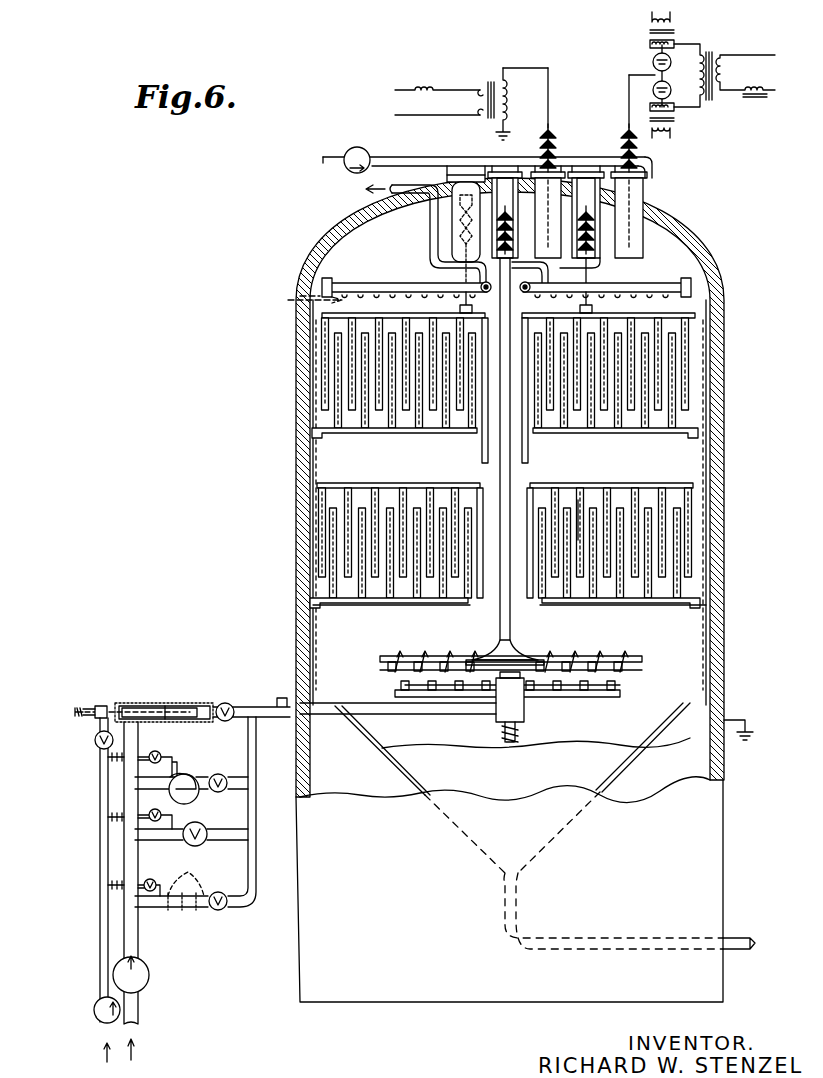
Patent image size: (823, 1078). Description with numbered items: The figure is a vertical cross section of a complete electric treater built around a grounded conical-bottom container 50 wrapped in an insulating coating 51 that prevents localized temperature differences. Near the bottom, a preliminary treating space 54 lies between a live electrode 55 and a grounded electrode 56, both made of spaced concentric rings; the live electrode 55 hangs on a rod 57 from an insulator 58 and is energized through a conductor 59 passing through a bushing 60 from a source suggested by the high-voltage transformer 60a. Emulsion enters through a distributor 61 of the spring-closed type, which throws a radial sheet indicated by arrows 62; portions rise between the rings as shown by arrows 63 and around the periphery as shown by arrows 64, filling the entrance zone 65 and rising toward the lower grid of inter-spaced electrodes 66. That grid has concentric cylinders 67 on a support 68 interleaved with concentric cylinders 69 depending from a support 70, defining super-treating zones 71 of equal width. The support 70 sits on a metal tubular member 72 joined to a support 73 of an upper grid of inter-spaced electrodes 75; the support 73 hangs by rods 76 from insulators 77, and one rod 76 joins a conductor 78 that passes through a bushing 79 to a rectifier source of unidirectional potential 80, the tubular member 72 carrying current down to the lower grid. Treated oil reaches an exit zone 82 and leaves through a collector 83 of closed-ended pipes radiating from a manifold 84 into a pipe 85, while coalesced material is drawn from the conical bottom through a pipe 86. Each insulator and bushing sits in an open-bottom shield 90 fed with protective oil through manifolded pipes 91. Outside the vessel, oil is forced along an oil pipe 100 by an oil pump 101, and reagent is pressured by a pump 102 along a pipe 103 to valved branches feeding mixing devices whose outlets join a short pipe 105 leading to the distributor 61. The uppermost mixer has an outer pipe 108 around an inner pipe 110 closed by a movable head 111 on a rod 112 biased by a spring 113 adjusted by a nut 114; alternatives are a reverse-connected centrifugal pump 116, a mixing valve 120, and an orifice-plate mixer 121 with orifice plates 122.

The container 50 is at (294, 456).
The coating 51 is at (300, 492).
The preliminary treating space 54 is at (384, 684).
The live electrode 55 is at (640, 660).
The grounded electrode 56 is at (625, 686).
The rod 57 is at (515, 630).
The insulator 58 is at (500, 175).
The conductor 59 is at (549, 80).
The bushing 60 is at (556, 146).
The high-voltage transformer 60a is at (478, 82).
The distributor 61 is at (526, 708).
The arrows 62 is at (490, 702).
The arrows 63 is at (414, 655).
The arrows 64 is at (380, 662).
The entrance zone 65 is at (704, 664).
The lower grid of inter-spaced electrodes 66 is at (694, 512).
The concentric cylinders 67 is at (698, 584).
The support 68 is at (650, 604).
The concentric cylinders 69 is at (680, 544).
The support 70 is at (626, 484).
The super-treating zones 71 is at (592, 515).
The metal tubular member 72 is at (498, 458).
The support 73 is at (628, 314).
The upper grid of inter-spaced electrodes 75 is at (696, 372).
The rods 76 is at (462, 304).
The insulators 77 is at (578, 178).
The conductor 78 is at (612, 268).
The bushing 79 is at (640, 218).
The high-voltage source of unidirectional potential 80 is at (716, 43).
The exit zone 82 is at (308, 294).
The collector 83 is at (366, 280).
The manifold 84 is at (528, 290).
The pipe 85 is at (452, 232).
The pipe 86 is at (742, 936).
The shield 90 is at (640, 235).
The pipes 91 is at (650, 170).
The oil pipe 100 is at (140, 938).
The oil pump 101 is at (150, 977).
The pump 102 is at (96, 1002).
The pipe 103 is at (98, 948).
The pipe 105 is at (280, 716).
The outer pipe 108 is at (195, 706).
The inner pipe 110 is at (154, 708).
The movable head 111 is at (174, 706).
The rod 112 is at (125, 706).
The spring 113 is at (88, 708).
The nut 114 is at (76, 710).
The centrifugal pump 116 is at (182, 778).
The mixing valve 120 is at (198, 826).
The orifice-plate mixer 121 is at (203, 918).
The orifice plates 122 is at (200, 878).